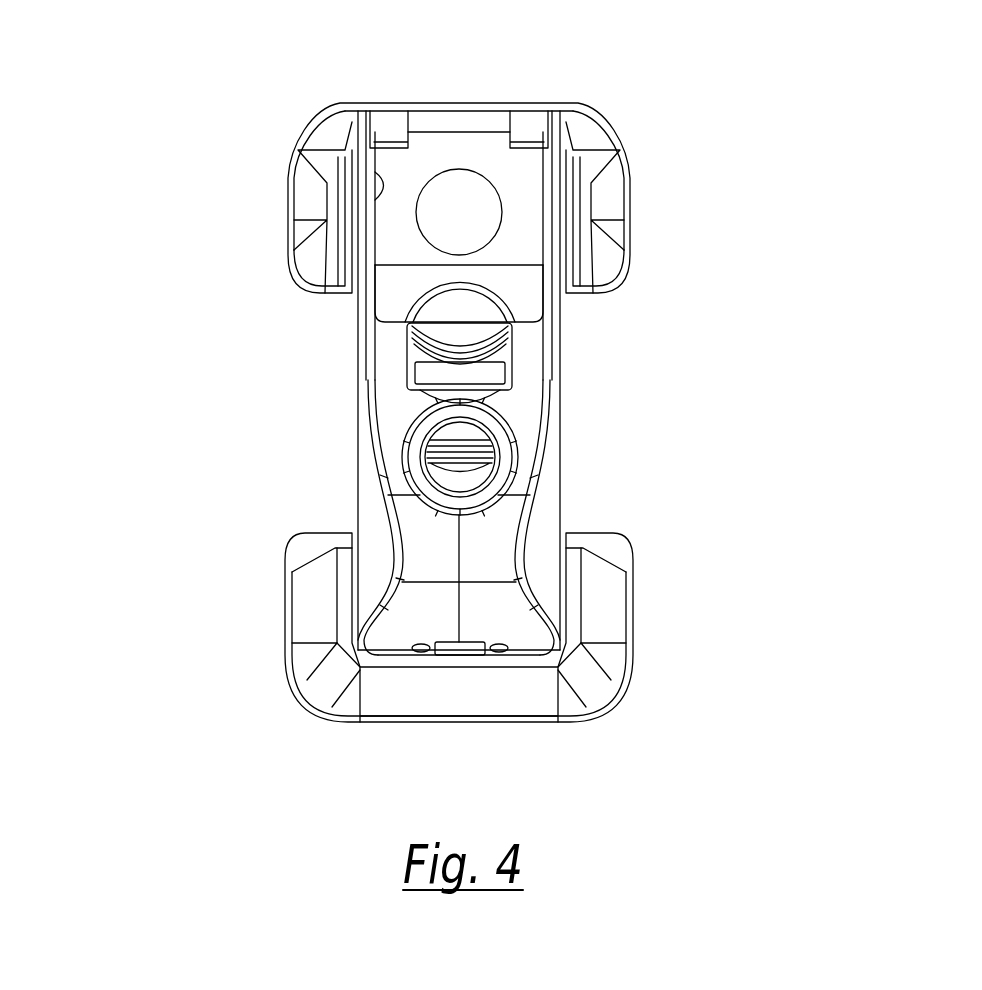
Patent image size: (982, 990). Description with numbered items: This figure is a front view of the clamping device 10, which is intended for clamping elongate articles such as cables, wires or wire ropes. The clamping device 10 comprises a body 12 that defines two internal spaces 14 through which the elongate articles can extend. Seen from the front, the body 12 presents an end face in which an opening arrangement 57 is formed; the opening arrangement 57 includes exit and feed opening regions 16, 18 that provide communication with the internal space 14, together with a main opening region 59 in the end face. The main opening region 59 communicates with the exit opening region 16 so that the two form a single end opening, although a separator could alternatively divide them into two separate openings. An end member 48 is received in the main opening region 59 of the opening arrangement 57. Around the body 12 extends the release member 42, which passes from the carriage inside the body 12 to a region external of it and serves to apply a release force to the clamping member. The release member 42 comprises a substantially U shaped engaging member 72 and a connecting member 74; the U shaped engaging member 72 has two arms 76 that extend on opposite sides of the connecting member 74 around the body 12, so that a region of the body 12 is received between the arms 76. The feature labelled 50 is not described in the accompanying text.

The clamping device 10 is at (203, 203).
The body 12 is at (375, 317).
The internal space 14 is at (418, 350).
The exit opening region 16 is at (512, 353).
The feed opening region 18 is at (430, 443).
The release member 42 is at (608, 125).
The end member 48 is at (403, 168).
The tab 50 is at (519, 166).
The opening arrangement 57 is at (535, 218).
The main opening region 59 is at (358, 170).
The U shaped engaging member 72 is at (628, 194).
The connecting member 74 is at (490, 707).
The arm 76 is at (305, 256).